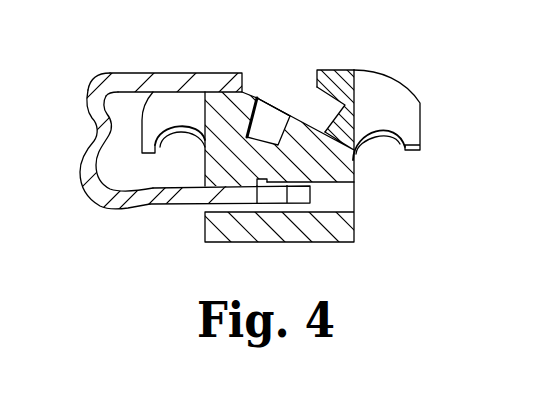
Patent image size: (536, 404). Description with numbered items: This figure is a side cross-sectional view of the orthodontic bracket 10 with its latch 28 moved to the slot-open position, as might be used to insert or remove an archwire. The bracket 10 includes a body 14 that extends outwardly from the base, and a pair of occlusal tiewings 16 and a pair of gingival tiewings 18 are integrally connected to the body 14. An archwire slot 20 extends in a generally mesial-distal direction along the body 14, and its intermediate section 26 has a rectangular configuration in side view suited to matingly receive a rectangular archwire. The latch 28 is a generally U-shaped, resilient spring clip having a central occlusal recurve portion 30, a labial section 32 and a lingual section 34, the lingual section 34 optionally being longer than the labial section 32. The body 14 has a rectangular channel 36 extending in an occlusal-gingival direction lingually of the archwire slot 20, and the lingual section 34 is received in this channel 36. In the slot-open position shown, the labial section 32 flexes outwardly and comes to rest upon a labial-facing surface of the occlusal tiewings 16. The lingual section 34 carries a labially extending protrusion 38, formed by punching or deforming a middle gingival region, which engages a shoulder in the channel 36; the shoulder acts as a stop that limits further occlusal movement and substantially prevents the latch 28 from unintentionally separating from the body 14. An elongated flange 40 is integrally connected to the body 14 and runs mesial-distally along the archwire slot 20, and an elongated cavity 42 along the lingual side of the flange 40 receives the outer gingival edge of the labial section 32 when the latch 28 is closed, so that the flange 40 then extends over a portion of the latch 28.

The orthodontic bracket 10 is at (400, 44).
The body 14 is at (364, 231).
The occlusal tiewings 16 is at (150, 127).
The gingival tiewings 18 is at (405, 100).
The archwire slot 20 is at (282, 100).
The intermediate section 26 is at (261, 97).
The latch 28 is at (93, 70).
The occlusal recurve portion 30 is at (83, 130).
The labial section 32 is at (202, 80).
The lingual section 34 is at (158, 192).
The channel 36 is at (337, 210).
The protrusion 38 is at (258, 178).
The flange 40 is at (333, 77).
The cavity 42 is at (317, 88).